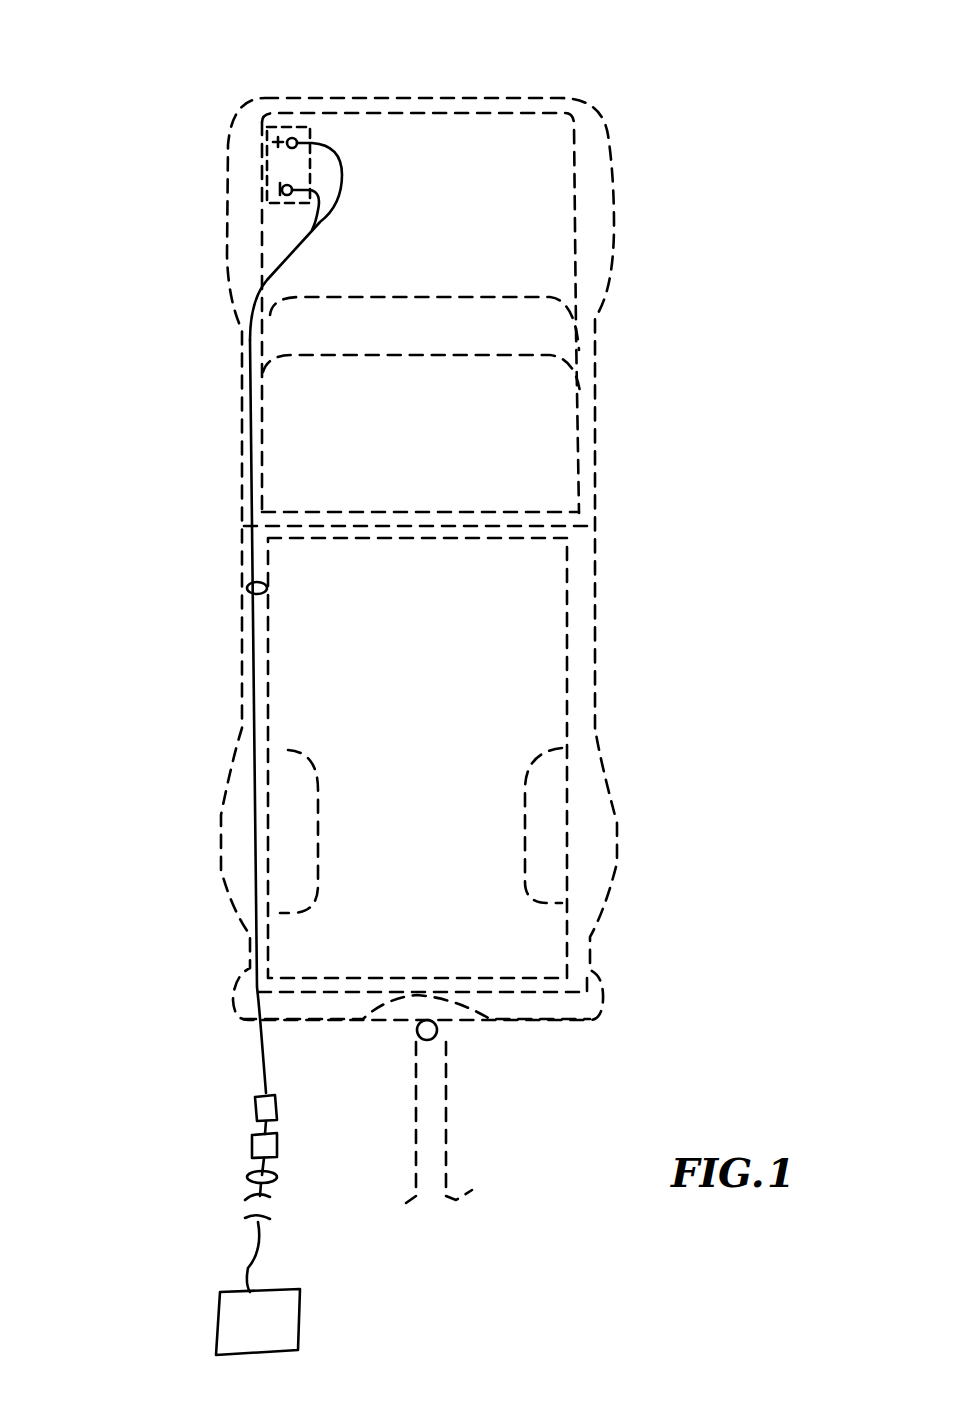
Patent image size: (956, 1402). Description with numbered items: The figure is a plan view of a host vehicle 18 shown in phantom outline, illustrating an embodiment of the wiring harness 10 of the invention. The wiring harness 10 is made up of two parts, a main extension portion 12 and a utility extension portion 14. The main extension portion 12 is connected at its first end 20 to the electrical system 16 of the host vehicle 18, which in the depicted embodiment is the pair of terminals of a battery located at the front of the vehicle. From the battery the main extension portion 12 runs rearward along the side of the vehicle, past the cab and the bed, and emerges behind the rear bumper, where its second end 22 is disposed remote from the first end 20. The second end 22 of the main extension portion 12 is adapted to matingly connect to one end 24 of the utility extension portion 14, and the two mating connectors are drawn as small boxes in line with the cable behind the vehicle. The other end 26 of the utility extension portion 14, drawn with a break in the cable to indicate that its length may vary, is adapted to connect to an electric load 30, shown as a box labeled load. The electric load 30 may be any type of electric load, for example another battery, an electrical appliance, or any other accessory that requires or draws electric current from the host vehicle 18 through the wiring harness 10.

The wiring harness 10 is at (158, 663).
The main extension portion 12 is at (250, 585).
The utility extension portion 14 is at (250, 1177).
The electrical system 16 is at (277, 168).
The host vehicle 18 is at (582, 469).
The first end 20 is at (357, 148).
The second end 22 is at (240, 1093).
The one end 24 is at (280, 1141).
The other end 26 is at (232, 1273).
The electric load 30 is at (302, 1311).